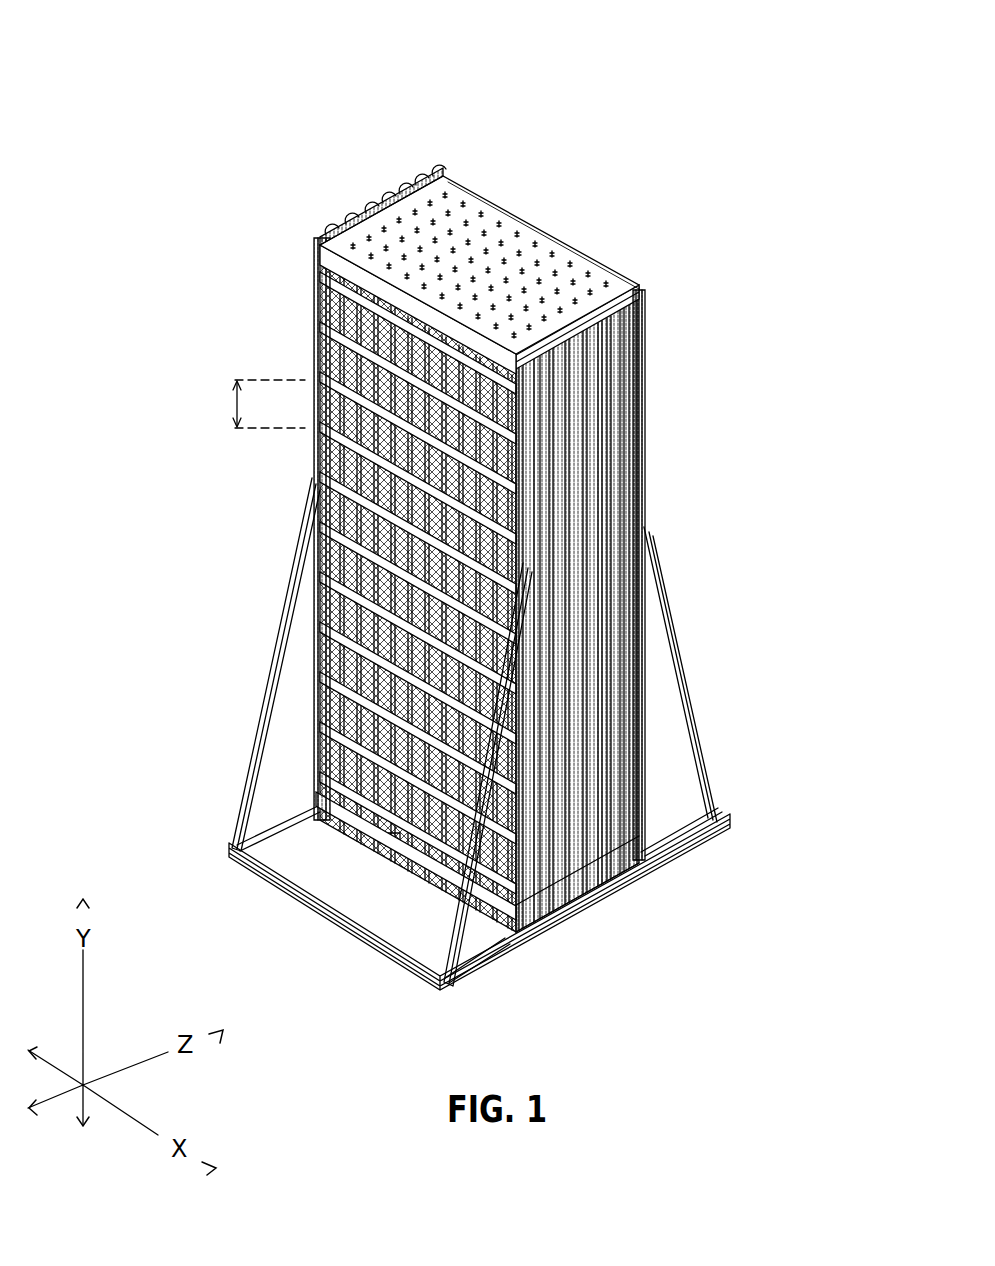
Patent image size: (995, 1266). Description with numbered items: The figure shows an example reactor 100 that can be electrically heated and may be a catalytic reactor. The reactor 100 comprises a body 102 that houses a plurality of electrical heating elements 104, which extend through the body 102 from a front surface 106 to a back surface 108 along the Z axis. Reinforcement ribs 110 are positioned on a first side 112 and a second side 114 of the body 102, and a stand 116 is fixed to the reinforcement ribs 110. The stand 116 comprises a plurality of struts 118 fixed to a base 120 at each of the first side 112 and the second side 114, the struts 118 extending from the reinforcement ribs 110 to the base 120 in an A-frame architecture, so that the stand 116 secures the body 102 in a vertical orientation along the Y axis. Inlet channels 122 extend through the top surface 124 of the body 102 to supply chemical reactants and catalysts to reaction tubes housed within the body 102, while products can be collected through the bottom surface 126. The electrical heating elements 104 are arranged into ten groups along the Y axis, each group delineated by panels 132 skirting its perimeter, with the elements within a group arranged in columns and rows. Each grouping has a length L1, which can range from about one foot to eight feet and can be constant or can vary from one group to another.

The reactor 100 is at (222, 58).
The body 102 is at (439, 171).
The electrical heating elements 104 is at (337, 292).
The front surface 106 is at (347, 265).
The back surface 108 is at (534, 222).
The reinforcement ribs 110 is at (322, 222).
The first side 112 is at (630, 299).
The second side 114 is at (380, 202).
The stand 116 is at (808, 705).
The struts 118 is at (700, 741).
The base 120 is at (695, 836).
The inlet channels 122 is at (570, 277).
The top surface 124 is at (550, 254).
The bottom surface 126 is at (434, 860).
The panels 132 is at (320, 372).
The length L1 is at (255, 404).